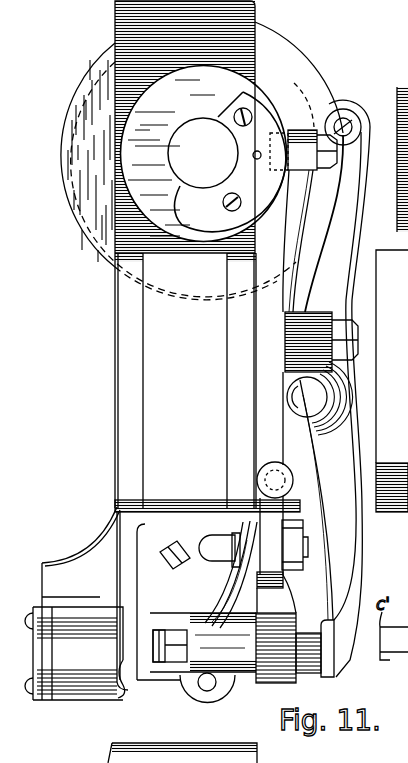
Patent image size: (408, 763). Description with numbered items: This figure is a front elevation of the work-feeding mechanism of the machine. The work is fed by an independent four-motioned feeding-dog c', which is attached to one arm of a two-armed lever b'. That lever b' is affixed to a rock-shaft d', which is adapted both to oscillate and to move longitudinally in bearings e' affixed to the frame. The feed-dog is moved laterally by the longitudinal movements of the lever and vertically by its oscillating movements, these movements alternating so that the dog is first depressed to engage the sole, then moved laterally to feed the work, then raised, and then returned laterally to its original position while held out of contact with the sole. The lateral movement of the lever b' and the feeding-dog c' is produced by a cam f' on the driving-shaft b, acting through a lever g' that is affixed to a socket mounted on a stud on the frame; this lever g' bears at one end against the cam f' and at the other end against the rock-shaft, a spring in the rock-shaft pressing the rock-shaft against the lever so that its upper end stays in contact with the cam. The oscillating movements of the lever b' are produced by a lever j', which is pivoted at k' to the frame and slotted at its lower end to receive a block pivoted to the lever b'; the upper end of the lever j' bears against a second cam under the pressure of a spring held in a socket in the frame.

The driving-shaft b is at (227, 162).
The two-armed lever b' is at (249, 601).
The feeding-dog c' is at (212, 647).
The rock-shaft d' is at (315, 661).
The bearings e' is at (82, 608).
The cam f' is at (339, 90).
The lever g' is at (349, 388).
The lever j' is at (276, 377).
The pivot k' is at (320, 398).